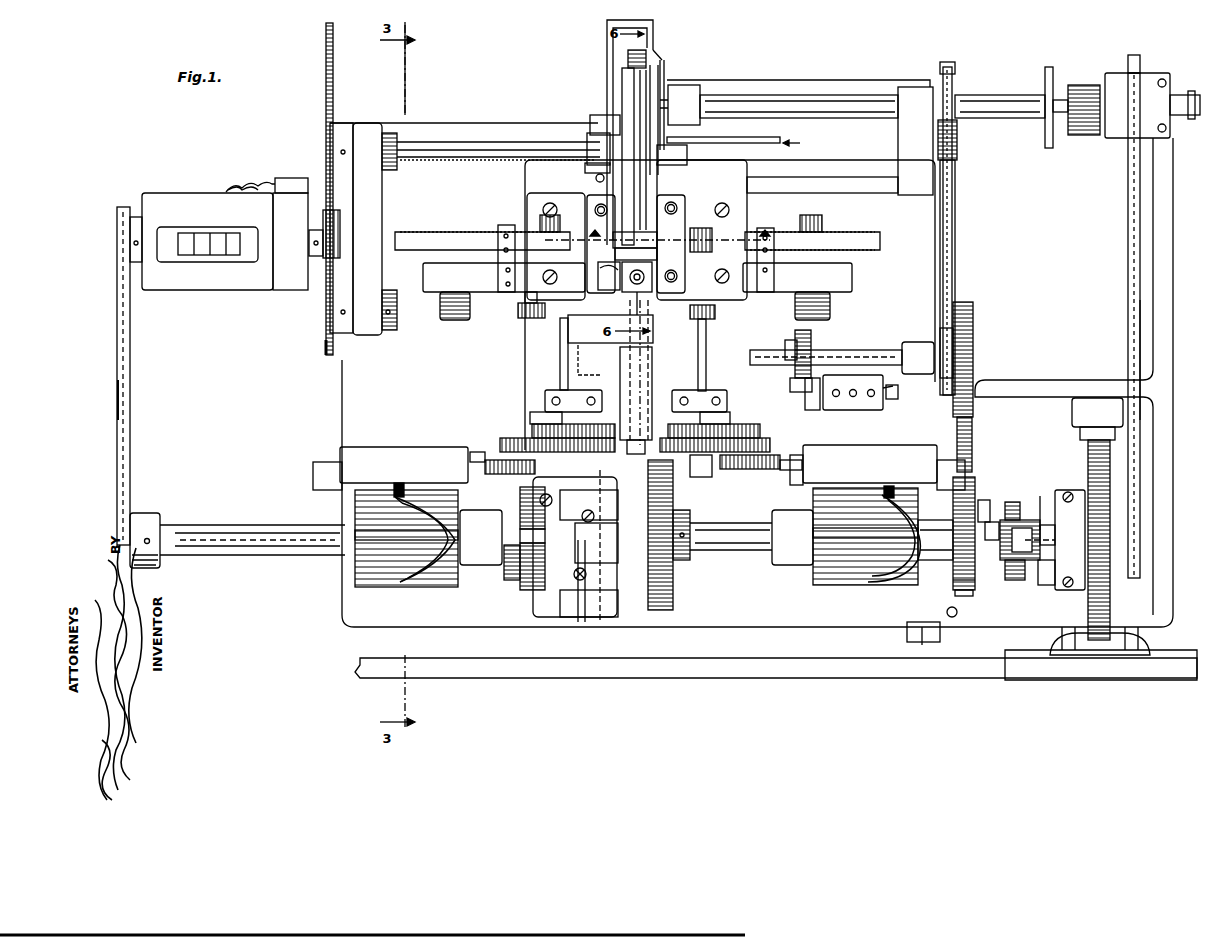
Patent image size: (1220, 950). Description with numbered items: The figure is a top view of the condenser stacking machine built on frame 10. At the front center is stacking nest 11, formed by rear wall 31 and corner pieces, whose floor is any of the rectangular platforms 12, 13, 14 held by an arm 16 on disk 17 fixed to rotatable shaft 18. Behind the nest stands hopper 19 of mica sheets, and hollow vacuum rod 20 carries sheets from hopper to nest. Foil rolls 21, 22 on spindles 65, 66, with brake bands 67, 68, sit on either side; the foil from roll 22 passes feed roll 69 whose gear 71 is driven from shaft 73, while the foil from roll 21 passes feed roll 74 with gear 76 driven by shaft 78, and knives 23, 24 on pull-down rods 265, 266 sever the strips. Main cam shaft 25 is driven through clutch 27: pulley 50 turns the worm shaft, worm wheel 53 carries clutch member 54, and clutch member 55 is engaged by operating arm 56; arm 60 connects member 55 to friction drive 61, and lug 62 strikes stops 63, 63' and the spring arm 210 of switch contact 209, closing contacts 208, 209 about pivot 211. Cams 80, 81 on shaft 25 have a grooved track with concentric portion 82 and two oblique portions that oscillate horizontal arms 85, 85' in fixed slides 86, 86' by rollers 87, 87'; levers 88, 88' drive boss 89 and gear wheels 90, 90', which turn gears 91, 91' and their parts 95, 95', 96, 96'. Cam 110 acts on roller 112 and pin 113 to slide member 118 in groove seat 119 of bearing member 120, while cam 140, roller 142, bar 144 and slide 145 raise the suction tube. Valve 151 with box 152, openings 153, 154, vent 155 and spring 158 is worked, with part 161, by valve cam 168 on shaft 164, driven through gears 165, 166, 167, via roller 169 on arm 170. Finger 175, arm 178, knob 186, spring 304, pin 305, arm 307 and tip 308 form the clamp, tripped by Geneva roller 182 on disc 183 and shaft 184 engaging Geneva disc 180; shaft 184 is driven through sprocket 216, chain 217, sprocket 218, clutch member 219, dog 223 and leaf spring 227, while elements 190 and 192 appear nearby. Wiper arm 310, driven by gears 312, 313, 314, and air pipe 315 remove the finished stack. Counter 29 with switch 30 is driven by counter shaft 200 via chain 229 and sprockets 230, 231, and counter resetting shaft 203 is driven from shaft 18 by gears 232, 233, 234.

The frame 10 is at (1173, 356).
The stacking nest 11 is at (612, 243).
The rectangular platform 12 is at (651, 239).
The rectangular platform 13 is at (672, 155).
The rectangular platform 14 is at (634, 52).
The arm 16 is at (659, 86).
The disk 17 is at (626, 106).
The rotatable shaft 18 is at (426, 140).
The hopper 19 is at (652, 286).
The hollow vacuum rod 20 is at (645, 298).
The foil roll 21 is at (845, 240).
The foil roll 22 is at (421, 238).
The knife 23 is at (657, 252).
The knife 24 is at (614, 246).
The main cam shaft 25 is at (256, 525).
The clutch 27 is at (1042, 494).
The counter 29 is at (206, 228).
The switch 30 is at (278, 180).
The rear wall 31 is at (776, 678).
The pulley 50 is at (1148, 648).
The worm wheel 53 is at (1112, 478).
The clutch member 54 is at (1045, 585).
The clutch member 55 is at (1030, 578).
The operating arm 56 is at (1010, 571).
The arm 60 is at (1020, 533).
The friction drive 61 is at (1076, 492).
The lug 62 is at (989, 500).
The stop 63 is at (946, 533).
The stop 63' is at (954, 577).
The spindle 65 is at (830, 312).
The spindle 66 is at (452, 320).
The brake band 67 is at (771, 235).
The brake band 68 is at (498, 234).
The feed roll 69 is at (563, 272).
The gear 71 is at (552, 318).
The shaft 73 is at (562, 380).
The feed roll 74 is at (712, 240).
The gear 76 is at (715, 313).
The shaft 78 is at (706, 341).
The cam 80 is at (836, 586).
The cam 81 is at (395, 582).
The concentric portion 82 is at (906, 533).
The horizontal arm 85 is at (796, 458).
The horizontal arm 85' is at (323, 464).
The fixed slide 86 is at (884, 457).
The fixed slide 86' is at (404, 453).
The roller 87 is at (892, 478).
The roller 87' is at (405, 478).
The lever 88 is at (761, 475).
The lever 88' is at (502, 465).
The boss 89 is at (712, 468).
The gear wheel 90 is at (720, 439).
The gear wheel 90' is at (538, 440).
The gear 91 is at (706, 442).
The gear 91' is at (550, 427).
The block 95 is at (711, 401).
The block 95' is at (544, 399).
The bearing 96 is at (735, 420).
The bearing 96' is at (523, 413).
The cam 110 is at (673, 592).
The roller 112 is at (673, 496).
The pin 113 is at (626, 478).
The slidable member 118 is at (628, 446).
The groove seat 119 is at (652, 357).
The bearing member 120 is at (652, 378).
The cam 140 is at (520, 582).
The following roller 142 is at (508, 560).
The bar 144 is at (520, 535).
The slide 145 is at (526, 512).
The valve 151 is at (805, 401).
The box 152 is at (840, 397).
The opening 153 is at (832, 399).
The opening 154 is at (854, 398).
The vent opening 155 is at (874, 398).
The spring 158 is at (895, 388).
The terminal 161 is at (896, 398).
The valve cam shaft 164 is at (876, 352).
The gear 165 is at (958, 592).
The idler gear 166 is at (973, 431).
The gear 167 is at (974, 326).
The valve cam 168 is at (812, 346).
The roller 169 is at (790, 385).
The arm 170 is at (792, 352).
The finger 175 is at (596, 123).
The arm 178 is at (587, 146).
The Geneva disc 180 is at (660, 76).
The roller 182 is at (684, 105).
The Geneva arm disc 183 is at (669, 98).
The shaft 184 is at (840, 98).
The knob 186 is at (590, 192).
The rod 190 is at (816, 180).
The rack 192 is at (955, 202).
The counter shaft 200 is at (117, 250).
The counter resetting shaft 203 is at (309, 241).
The switch contact 208 is at (910, 634).
The switch contact 209 is at (945, 628).
The spring arm 210 is at (1010, 502).
The pivot 211 is at (957, 616).
The sprocket wheel 216 is at (1189, 119).
The chain 217 is at (1128, 355).
The sprocket wheel 218 is at (1140, 64).
The clutch member 219 is at (1118, 140).
The dog 223 is at (1085, 136).
The leaf spring 227 is at (1191, 95).
The chain 229 is at (131, 405).
The sprocket 230 is at (121, 207).
The sprocket 231 is at (152, 513).
The gear 232 is at (334, 80).
The idler gear 233 is at (326, 348).
The gear 234 is at (340, 222).
The pull-down rod 265 is at (676, 206).
The pull-down rod 266 is at (606, 292).
The tension spring 304 is at (585, 168).
The pin 305 is at (596, 178).
The arm 307 is at (630, 22).
The tip 308 is at (657, 48).
The hooked wiper arm 310 is at (641, 122).
The gear 312 is at (953, 80).
The idler gear 313 is at (957, 151).
The gear 314 is at (943, 68).
The air pipe 315 is at (761, 144).